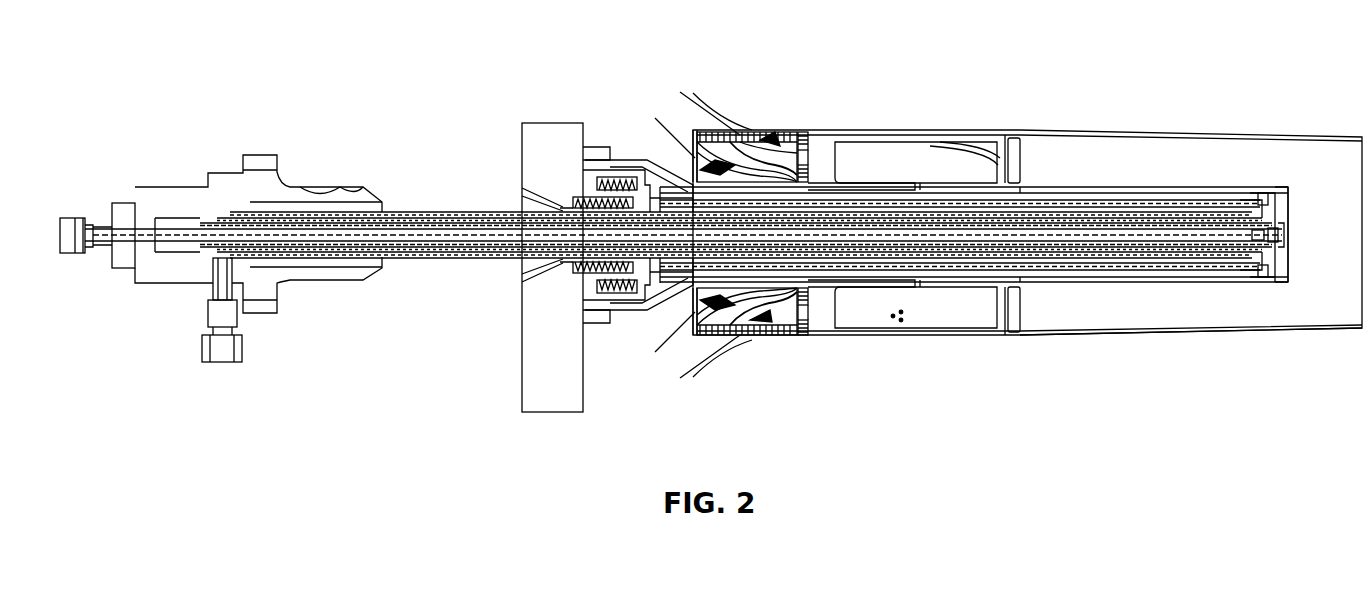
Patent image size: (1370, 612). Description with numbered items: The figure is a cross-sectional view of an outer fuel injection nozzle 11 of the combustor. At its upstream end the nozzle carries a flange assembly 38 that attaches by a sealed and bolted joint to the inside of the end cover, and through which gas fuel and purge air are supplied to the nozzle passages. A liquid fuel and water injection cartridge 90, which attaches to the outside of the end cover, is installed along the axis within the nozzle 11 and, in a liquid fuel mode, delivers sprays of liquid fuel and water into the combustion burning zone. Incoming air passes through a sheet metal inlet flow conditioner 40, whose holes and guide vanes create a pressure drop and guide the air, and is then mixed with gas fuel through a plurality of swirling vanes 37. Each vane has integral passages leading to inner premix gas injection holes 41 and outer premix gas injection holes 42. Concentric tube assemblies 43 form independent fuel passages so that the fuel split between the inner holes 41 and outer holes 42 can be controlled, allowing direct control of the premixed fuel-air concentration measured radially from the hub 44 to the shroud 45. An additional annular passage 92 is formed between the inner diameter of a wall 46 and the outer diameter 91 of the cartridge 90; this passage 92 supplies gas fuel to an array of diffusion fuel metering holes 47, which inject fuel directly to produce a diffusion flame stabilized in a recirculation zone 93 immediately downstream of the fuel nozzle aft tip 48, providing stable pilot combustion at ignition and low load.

The outer fuel injection nozzle 11 is at (530, 52).
The swirling vanes 37 is at (960, 318).
The flange assembly 38 is at (530, 396).
The inlet flow conditioner 40 is at (757, 333).
The inner premix gas injection holes 41 is at (906, 180).
The outer premix gas injection holes 42 is at (893, 149).
The concentric tube assemblies 43 is at (745, 200).
The hub 44 is at (1070, 183).
The shroud 45 is at (1088, 331).
The wall 46 is at (1130, 193).
The diffusion fuel metering holes 47 is at (1285, 204).
The fuel nozzle aft tip 48 is at (1282, 195).
The liquid fuel and water injection cartridge 90 is at (298, 186).
The outer diameter 91 is at (1218, 215).
The annular passage 92 is at (1177, 205).
The recirculation zone 93 is at (1345, 273).